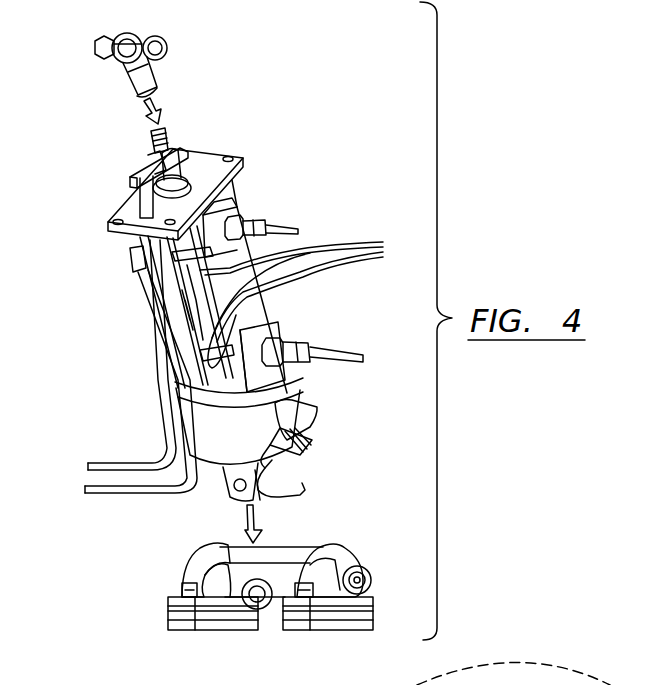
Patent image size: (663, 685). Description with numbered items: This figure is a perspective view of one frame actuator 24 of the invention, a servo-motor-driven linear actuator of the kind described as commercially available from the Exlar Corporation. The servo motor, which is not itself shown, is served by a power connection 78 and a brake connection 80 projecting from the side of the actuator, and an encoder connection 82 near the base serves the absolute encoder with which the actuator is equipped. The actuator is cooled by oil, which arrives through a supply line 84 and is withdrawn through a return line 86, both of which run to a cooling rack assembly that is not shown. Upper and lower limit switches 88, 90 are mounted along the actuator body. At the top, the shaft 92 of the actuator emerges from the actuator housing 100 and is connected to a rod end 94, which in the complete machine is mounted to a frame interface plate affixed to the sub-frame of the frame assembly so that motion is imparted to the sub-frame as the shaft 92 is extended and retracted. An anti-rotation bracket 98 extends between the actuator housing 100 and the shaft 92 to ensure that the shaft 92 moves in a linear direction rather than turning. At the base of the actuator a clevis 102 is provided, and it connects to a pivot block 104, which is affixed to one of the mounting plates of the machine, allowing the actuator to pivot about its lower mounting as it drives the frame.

The frame actuator 24 is at (310, 95).
The power connection 78 is at (287, 337).
The brake connection 80 is at (251, 220).
The encoder connection 82 is at (307, 425).
The supply line 84 is at (118, 490).
The return line 86 is at (117, 462).
The upper limit switch 88 is at (183, 300).
The lower limit switch 90 is at (187, 317).
The shaft 92 is at (168, 146).
The rod end 94 is at (152, 73).
The anti-rotation bracket 98 is at (138, 168).
The actuator housing 100 is at (108, 229).
The clevis 102 is at (228, 497).
The pivot block 104 is at (297, 555).